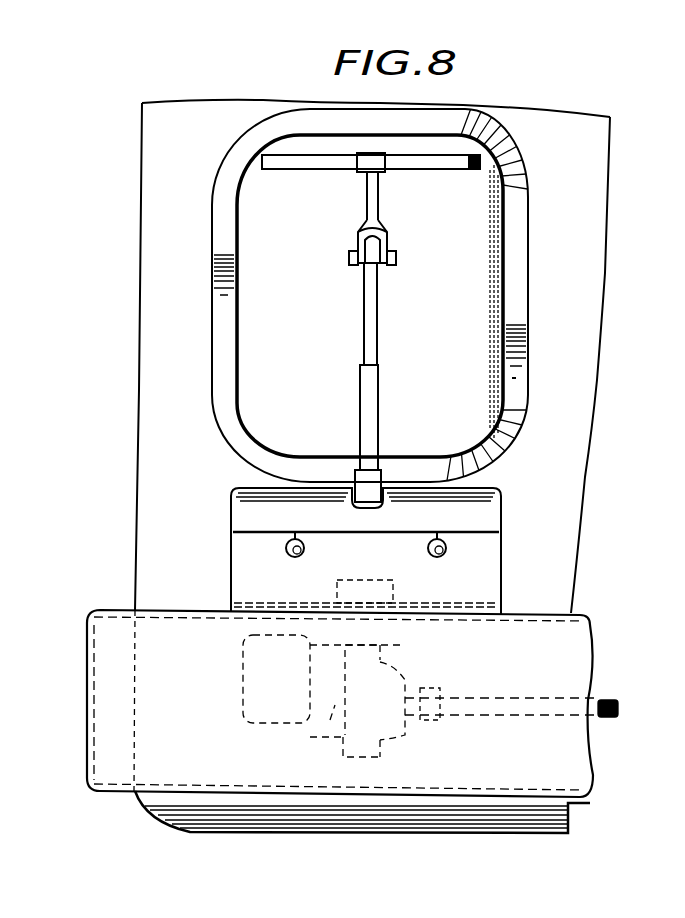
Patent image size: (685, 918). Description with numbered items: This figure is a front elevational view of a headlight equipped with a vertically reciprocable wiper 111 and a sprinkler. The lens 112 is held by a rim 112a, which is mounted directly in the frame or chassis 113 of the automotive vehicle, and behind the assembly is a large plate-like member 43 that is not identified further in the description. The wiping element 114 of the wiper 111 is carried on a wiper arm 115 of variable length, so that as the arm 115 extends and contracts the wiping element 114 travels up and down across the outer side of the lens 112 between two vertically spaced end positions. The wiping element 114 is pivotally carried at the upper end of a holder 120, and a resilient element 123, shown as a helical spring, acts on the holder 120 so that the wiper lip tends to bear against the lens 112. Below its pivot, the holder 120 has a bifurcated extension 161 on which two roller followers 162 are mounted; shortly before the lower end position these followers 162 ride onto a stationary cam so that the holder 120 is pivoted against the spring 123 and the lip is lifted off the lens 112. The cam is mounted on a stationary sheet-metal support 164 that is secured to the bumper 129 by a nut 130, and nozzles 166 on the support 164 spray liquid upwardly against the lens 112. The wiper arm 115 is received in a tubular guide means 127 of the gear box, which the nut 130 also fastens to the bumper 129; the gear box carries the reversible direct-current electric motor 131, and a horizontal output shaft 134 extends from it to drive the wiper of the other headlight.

The mounting panel 43 is at (148, 340).
The lens 112 is at (487, 308).
The rim 112a is at (512, 378).
The wiping element 114 is at (478, 181).
The holder 120 is at (378, 193).
The wiper 111 is at (348, 226).
The bifurcated extension 161 is at (388, 238).
The roller followers 162 is at (355, 266).
The wiper arm 115 is at (363, 416).
The stationary support 164 is at (487, 572).
The nozzles 166 is at (428, 550).
The nut 130 is at (386, 597).
The bumper 129 is at (87, 707).
The electric motor 131 is at (324, 700).
The tubular guide means 127 is at (388, 648).
The resilient element 123 is at (388, 757).
The output shaft 134 is at (606, 700).
The frame or chassis 113 is at (390, 836).